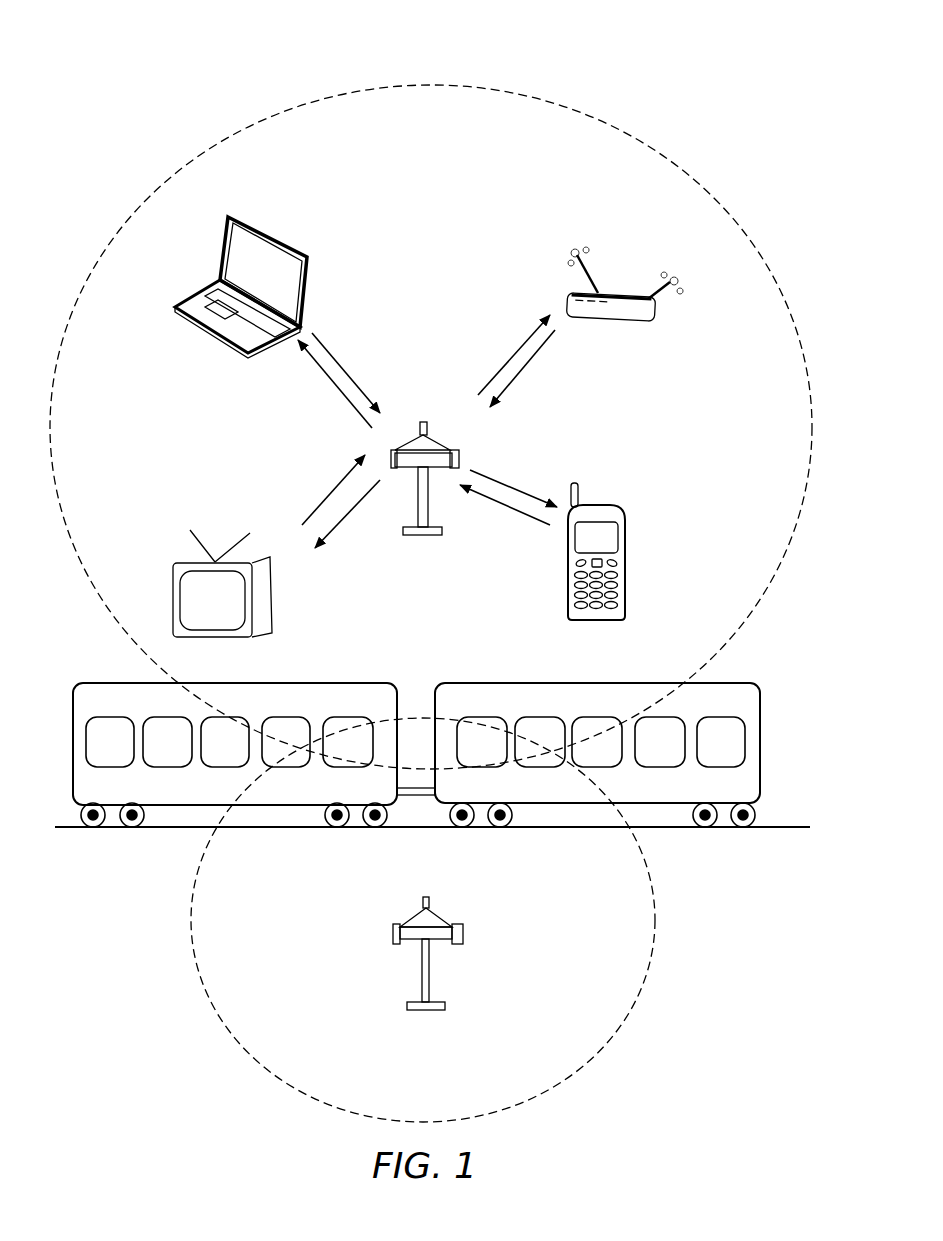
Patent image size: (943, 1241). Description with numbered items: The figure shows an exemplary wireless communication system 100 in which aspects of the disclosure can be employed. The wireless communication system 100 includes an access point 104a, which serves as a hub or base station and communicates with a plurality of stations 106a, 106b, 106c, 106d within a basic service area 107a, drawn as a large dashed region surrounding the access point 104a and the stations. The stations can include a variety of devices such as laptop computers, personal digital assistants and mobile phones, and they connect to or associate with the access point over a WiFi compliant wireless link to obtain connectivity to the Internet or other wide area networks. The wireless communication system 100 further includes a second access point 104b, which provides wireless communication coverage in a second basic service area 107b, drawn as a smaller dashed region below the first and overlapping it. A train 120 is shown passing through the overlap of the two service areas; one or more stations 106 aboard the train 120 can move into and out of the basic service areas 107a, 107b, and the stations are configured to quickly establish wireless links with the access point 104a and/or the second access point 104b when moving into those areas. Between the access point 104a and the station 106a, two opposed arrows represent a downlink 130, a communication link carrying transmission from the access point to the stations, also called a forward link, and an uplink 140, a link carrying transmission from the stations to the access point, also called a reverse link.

The wireless communication system 100 is at (680, 66).
The access point 104a is at (423, 421).
The second access point 104b is at (426, 896).
The stations 106 is at (283, 701).
The station 106a is at (601, 504).
The station 106b is at (265, 558).
The station 106c is at (240, 215).
The station 106d is at (631, 290).
The basic service area 107a is at (757, 244).
The basic service area 107b is at (655, 885).
The train 120 is at (433, 740).
The downlink 130 is at (490, 477).
The uplink 140 is at (483, 500).